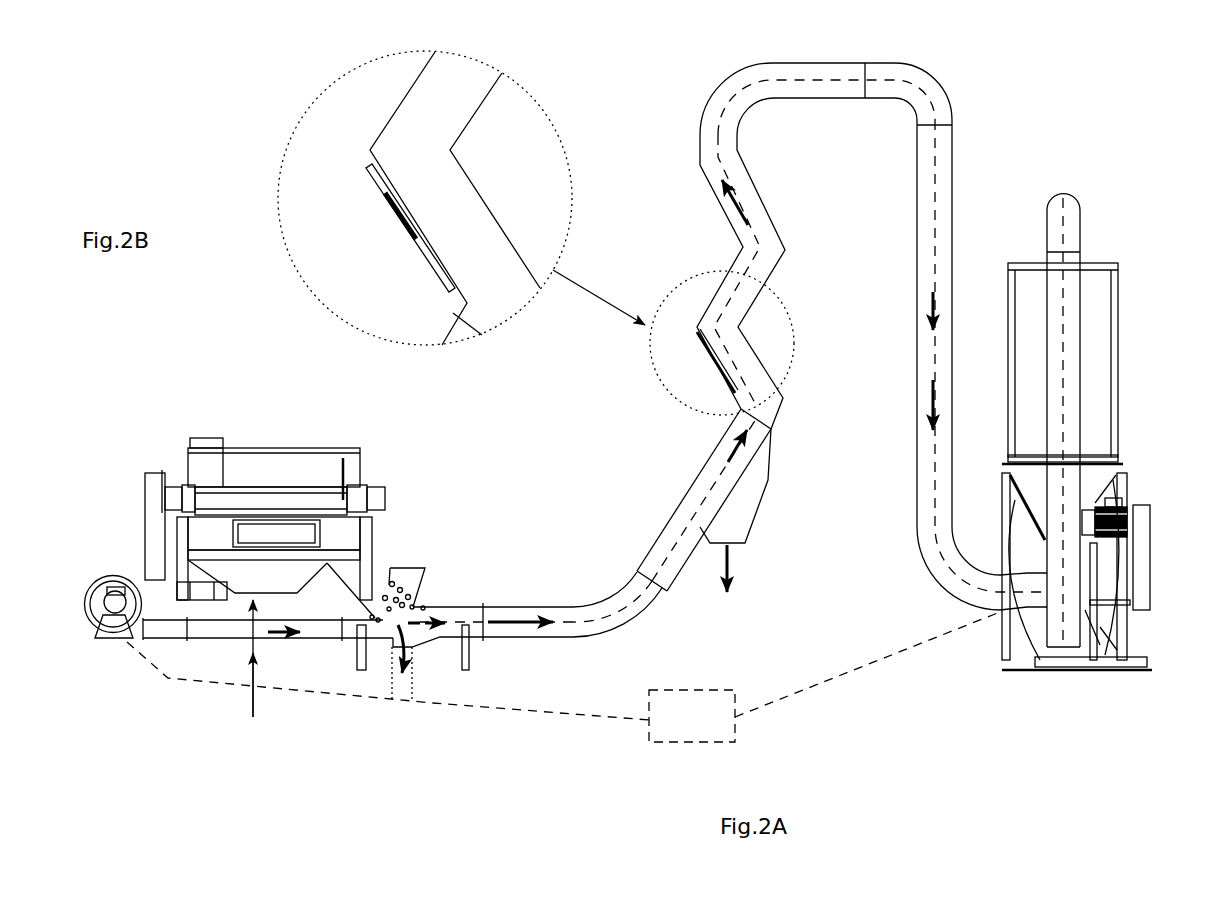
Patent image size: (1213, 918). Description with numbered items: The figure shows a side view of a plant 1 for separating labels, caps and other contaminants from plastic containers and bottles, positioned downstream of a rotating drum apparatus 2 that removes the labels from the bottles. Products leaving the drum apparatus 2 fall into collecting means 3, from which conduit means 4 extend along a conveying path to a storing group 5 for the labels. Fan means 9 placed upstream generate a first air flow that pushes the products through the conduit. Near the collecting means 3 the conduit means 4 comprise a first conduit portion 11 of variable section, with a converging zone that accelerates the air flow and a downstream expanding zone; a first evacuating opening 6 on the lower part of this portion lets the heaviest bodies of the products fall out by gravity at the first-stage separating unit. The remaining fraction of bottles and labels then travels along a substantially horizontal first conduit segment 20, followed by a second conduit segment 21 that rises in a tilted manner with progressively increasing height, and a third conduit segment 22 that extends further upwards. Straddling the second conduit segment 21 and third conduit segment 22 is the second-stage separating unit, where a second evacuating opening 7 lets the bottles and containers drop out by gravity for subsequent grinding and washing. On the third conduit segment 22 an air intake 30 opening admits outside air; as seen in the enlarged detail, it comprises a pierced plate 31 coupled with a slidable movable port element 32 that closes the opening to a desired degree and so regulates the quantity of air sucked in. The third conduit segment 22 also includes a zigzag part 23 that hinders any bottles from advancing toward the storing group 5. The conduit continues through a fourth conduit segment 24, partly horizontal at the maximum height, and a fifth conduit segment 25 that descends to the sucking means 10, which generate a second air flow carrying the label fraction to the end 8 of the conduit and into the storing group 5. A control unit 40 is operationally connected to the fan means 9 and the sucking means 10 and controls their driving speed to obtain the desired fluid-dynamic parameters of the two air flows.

In FIG. 2A, the plant 1 is at (575, 486).
In FIG. 2A, the rotating drum apparatus 2 is at (246, 492).
In FIG. 2A, the collecting means 3 is at (410, 567).
In FIG. 2A, the conduit means 4 is at (633, 608).
In FIG. 2A, the storing group 5 is at (1140, 467).
In FIG. 2A, the first evacuating opening 6 is at (383, 655).
In FIG. 2A, the second evacuating opening 7 is at (737, 555).
In FIG. 2A, the end 8 is at (978, 667).
In FIG. 2A, the fan means 9 is at (113, 592).
In FIG. 2A, the sucking means 10 is at (1040, 625).
In FIG. 2A, the first conduit portion 11 is at (423, 680).
In FIG. 2A, the first conduit segment 20 is at (553, 643).
In FIG. 2A, the second conduit segment 21 is at (680, 512).
In FIG. 2A, the third conduit segment 22 is at (745, 248).
In FIG. 2A, the zigzag part 23 is at (785, 298).
In FIG. 2A, the fourth conduit segment 24 is at (857, 72).
In FIG. 2A, the fifth conduit segment 25 is at (940, 205).
In FIG. 2B, the air intake opening 30 is at (380, 255).
In FIG. 2B, the pierced plate 31 is at (415, 237).
In FIG. 2B, the movable port element 32 is at (388, 187).
In FIG. 2A, the control unit 40 is at (704, 731).